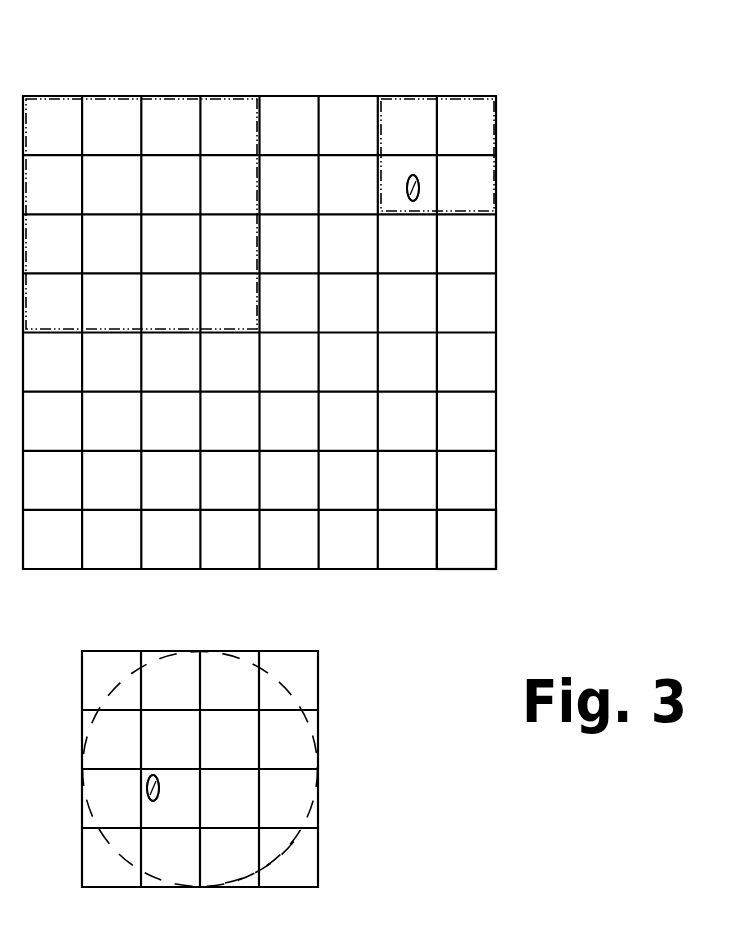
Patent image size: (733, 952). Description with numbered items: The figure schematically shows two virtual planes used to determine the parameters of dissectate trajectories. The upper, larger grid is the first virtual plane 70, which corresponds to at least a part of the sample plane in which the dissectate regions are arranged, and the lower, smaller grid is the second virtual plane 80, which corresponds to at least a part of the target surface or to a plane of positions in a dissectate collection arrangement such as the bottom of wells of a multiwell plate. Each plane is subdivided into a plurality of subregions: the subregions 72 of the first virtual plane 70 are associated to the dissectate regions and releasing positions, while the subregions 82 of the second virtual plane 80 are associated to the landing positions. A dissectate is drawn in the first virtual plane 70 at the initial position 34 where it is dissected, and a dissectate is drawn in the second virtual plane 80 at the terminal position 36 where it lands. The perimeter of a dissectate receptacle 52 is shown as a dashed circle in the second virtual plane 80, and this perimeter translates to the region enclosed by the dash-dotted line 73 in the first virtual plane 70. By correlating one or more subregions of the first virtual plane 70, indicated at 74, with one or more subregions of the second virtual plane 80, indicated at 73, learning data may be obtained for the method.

The initial position 34 is at (418, 165).
The terminal position 36 is at (163, 812).
The dissectate receptacle 52 is at (283, 853).
The first virtual plane 70 is at (534, 325).
The subregions of the first virtual plane 72 is at (480, 537).
The line enclosing a region in the first virtual plane 73 is at (52, 96).
The correlated subregions of the first virtual plane 74 is at (463, 95).
The second virtual plane 80 is at (360, 775).
The subregions of the second virtual plane 82 is at (304, 672).